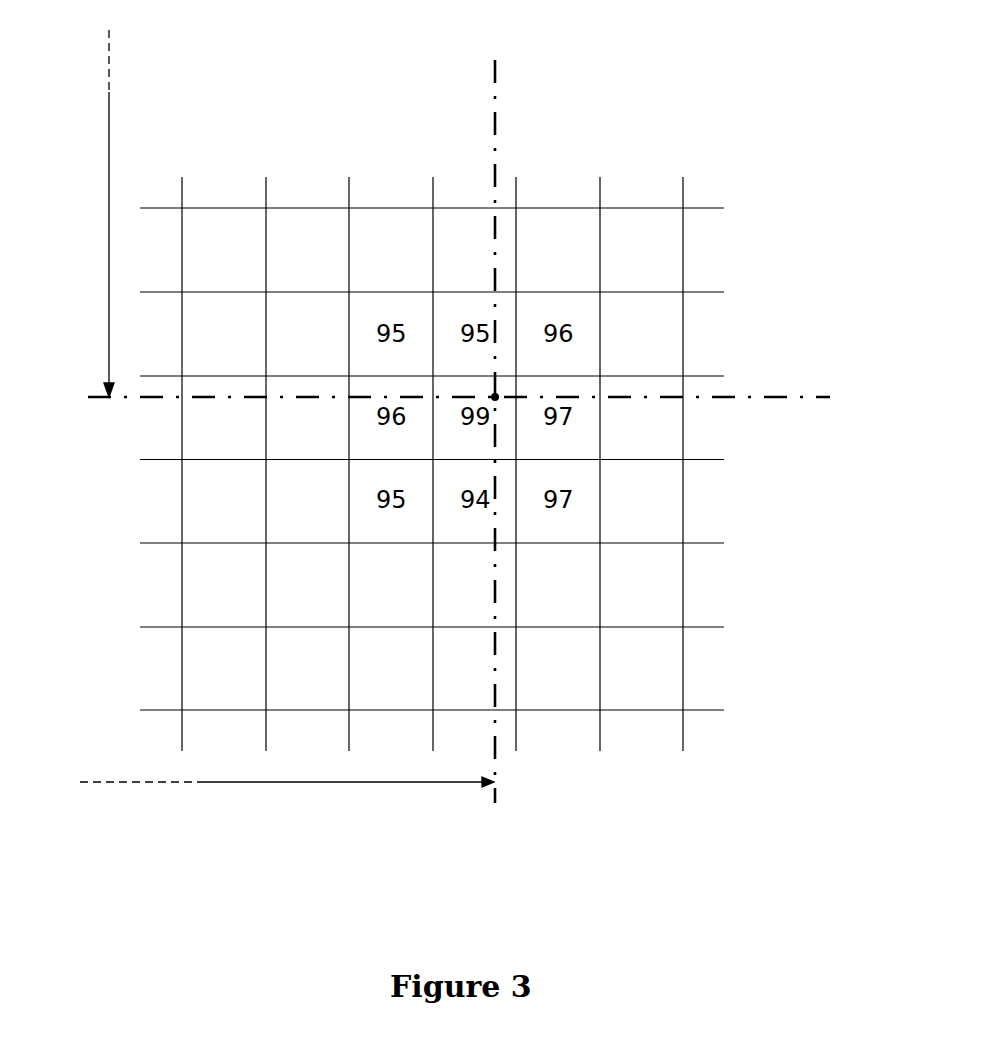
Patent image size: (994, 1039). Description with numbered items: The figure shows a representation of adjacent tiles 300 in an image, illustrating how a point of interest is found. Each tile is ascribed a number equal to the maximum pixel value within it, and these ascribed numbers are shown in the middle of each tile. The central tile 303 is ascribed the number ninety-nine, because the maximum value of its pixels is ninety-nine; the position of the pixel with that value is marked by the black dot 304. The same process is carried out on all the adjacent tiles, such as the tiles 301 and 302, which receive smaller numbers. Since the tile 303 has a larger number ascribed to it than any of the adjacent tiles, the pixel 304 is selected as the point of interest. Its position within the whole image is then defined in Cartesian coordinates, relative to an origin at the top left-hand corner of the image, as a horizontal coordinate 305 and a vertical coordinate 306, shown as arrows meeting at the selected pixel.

The representation of adjacent tiles 300 is at (713, 178).
The adjacent tile 301 is at (580, 334).
The adjacent tile 302 is at (583, 500).
The tile 303 is at (443, 437).
The pixel 304 is at (499, 393).
The horizontal coordinate 305 is at (268, 792).
The vertical coordinate 306 is at (105, 198).